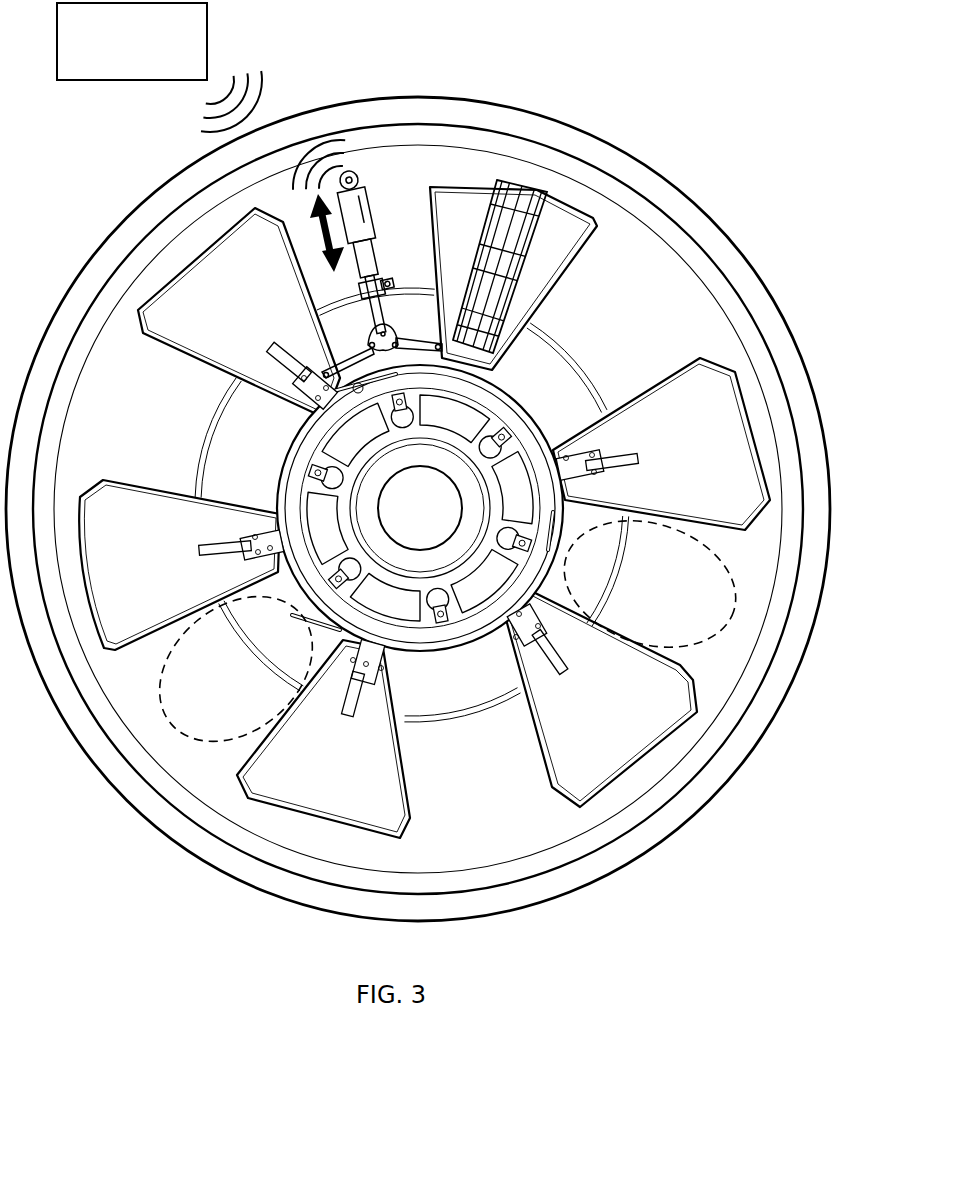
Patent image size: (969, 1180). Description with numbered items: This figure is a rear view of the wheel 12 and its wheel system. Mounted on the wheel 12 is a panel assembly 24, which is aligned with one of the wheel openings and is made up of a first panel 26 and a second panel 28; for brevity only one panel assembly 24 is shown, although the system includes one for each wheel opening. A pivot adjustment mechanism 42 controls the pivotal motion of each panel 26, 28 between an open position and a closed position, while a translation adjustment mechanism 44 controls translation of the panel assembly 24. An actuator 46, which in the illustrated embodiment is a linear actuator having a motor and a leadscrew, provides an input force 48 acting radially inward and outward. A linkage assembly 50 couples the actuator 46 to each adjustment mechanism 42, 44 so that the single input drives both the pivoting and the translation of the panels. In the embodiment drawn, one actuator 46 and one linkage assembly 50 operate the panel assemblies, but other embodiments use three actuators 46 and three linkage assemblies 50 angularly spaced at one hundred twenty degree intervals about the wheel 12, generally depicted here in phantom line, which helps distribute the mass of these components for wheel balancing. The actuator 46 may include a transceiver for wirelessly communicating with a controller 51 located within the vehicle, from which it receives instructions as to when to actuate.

The wheel 12 is at (345, 100).
The panel assembly 24 is at (470, 232).
The first panel 26 is at (545, 215).
The second panel 28 is at (523, 195).
The pivot adjustment mechanism 42 is at (264, 352).
The translation adjustment mechanism 44 is at (526, 408).
The actuator 46 is at (372, 200).
The input force 48 is at (320, 230).
The linkage assembly 50 is at (368, 336).
The controller 51 is at (146, 56).